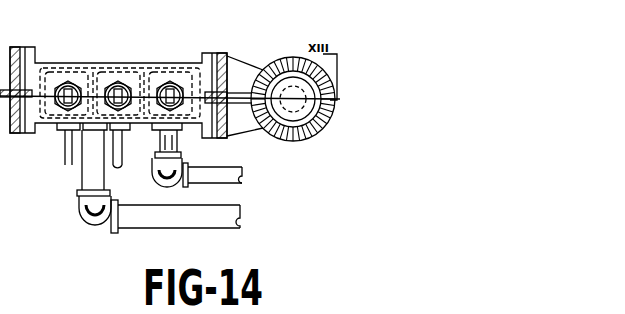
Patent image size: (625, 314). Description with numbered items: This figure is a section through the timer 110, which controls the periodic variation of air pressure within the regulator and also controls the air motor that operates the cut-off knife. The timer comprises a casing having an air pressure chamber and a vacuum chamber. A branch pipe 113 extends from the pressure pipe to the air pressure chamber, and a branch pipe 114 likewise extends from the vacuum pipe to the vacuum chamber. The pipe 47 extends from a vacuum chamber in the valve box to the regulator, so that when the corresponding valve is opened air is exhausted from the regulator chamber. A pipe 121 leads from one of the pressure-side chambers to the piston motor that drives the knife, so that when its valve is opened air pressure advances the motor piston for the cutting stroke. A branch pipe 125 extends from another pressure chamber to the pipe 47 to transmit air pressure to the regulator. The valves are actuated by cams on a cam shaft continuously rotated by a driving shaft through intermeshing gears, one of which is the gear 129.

The timer 110 is at (137, 68).
The branch pipe 125 is at (65, 138).
The pipe 121 is at (124, 162).
The branch pipe 113 is at (148, 218).
The pipe 47 is at (166, 146).
The branch pipe 114 is at (215, 172).
The gear 129 is at (289, 58).